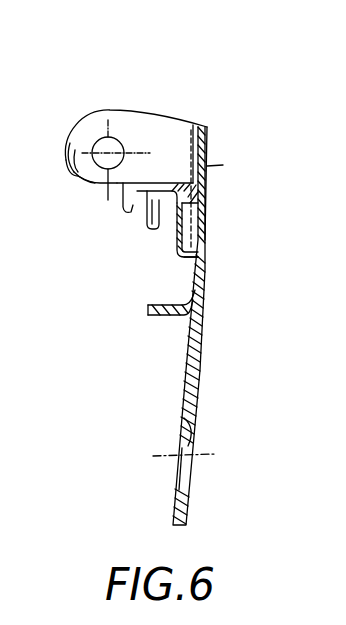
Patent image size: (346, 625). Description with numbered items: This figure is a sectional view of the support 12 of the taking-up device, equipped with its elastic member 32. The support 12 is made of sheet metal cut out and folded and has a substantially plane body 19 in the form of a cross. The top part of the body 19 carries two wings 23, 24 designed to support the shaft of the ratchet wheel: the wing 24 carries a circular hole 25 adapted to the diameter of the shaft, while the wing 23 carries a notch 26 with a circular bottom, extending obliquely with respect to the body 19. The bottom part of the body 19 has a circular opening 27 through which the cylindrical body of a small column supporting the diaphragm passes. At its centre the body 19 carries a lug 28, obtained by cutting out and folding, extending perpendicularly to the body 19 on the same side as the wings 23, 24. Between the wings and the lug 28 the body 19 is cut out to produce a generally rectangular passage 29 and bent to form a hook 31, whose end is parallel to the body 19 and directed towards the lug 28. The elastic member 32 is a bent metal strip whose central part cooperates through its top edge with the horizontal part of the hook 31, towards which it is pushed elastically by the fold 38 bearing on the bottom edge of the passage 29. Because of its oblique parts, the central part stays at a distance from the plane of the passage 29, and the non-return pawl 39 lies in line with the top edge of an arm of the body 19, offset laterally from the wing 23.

The support 12 is at (216, 154).
The body 19 is at (200, 378).
The wing 23 is at (172, 142).
The wing 24 is at (88, 185).
The circular hole 25 is at (98, 140).
The notch 26 is at (72, 150).
The circular opening 27 is at (197, 437).
The lug 28 is at (155, 320).
The passage 29 is at (207, 218).
The hook 31 is at (150, 232).
The elastic member 32 is at (164, 258).
The fold 38 is at (207, 240).
The non-return pawl 39 is at (126, 197).